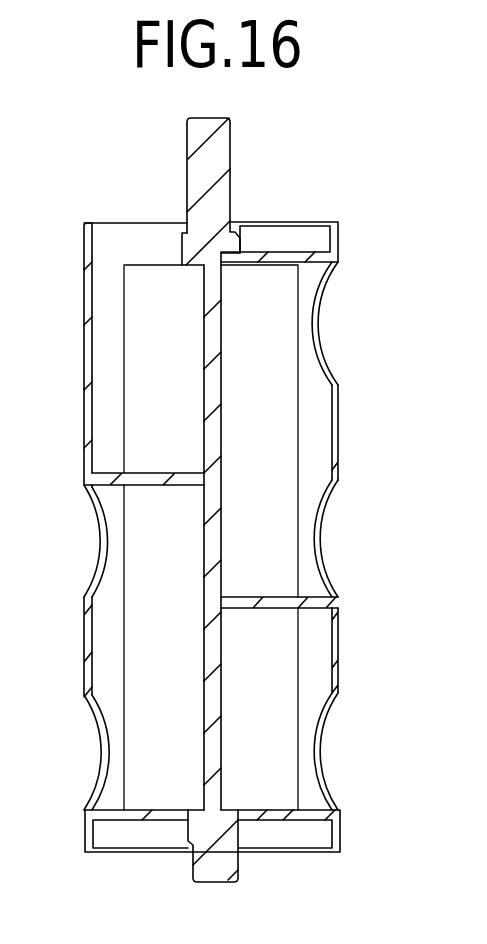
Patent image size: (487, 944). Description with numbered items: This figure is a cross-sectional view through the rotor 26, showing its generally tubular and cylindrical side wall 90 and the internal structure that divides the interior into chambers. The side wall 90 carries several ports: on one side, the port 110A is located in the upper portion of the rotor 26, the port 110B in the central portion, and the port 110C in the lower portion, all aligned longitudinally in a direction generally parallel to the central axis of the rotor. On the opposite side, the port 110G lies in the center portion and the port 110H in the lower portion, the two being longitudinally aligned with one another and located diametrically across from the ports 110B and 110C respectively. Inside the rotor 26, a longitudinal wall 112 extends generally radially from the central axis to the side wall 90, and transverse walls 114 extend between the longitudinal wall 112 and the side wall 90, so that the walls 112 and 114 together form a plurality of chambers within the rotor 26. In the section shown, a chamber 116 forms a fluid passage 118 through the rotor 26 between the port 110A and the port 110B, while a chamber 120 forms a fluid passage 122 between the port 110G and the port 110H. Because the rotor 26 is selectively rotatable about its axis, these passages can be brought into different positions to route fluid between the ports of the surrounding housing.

The rotor 26 is at (278, 195).
The side wall 90 is at (90, 438).
The port 110A is at (320, 333).
The port 110B is at (322, 540).
The port 110C is at (320, 746).
The port 110G is at (100, 543).
The port 110H is at (108, 740).
The longitudinal walls 112 is at (222, 367).
The transverse walls 114 is at (283, 256).
The chamber 116 is at (317, 450).
The fluid passage 118 is at (287, 412).
The chamber 120 is at (108, 668).
The fluid passage 122 is at (135, 640).